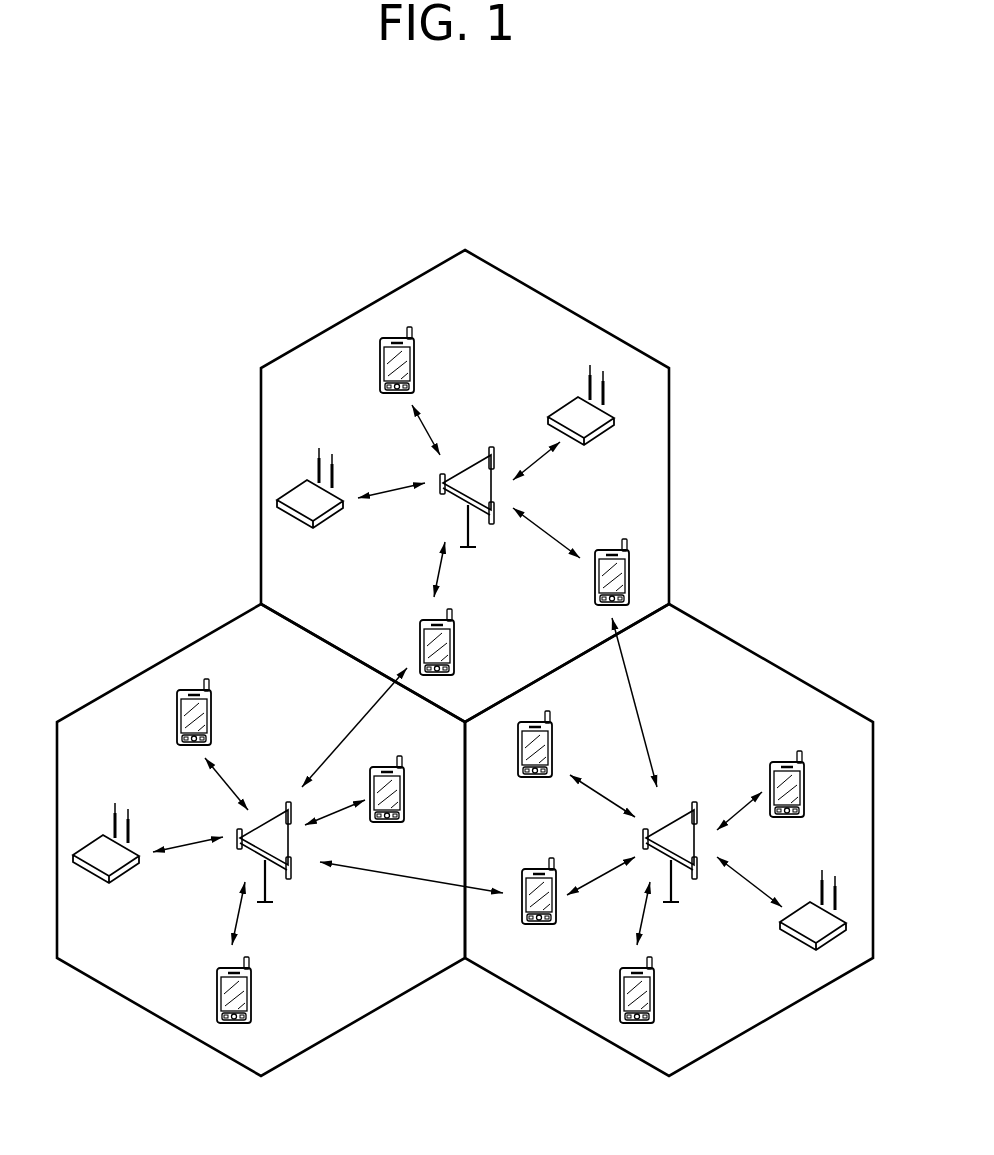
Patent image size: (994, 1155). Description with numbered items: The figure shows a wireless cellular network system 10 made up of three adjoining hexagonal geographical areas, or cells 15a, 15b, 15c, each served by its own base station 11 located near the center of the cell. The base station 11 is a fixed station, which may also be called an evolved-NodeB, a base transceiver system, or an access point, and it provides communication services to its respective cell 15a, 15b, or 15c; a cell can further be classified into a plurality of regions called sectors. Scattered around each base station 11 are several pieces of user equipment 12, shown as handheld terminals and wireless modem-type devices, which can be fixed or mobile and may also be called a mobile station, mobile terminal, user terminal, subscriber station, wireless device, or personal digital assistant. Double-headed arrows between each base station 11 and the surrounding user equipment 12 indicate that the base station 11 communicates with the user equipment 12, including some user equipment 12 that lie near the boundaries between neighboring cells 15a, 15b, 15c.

The wireless cellular network system 10 is at (766, 372).
The base station 11 is at (471, 466).
The user equipment 12 is at (414, 365).
The cell 15a is at (668, 474).
The cell 15b is at (798, 680).
The cell 15c is at (125, 682).